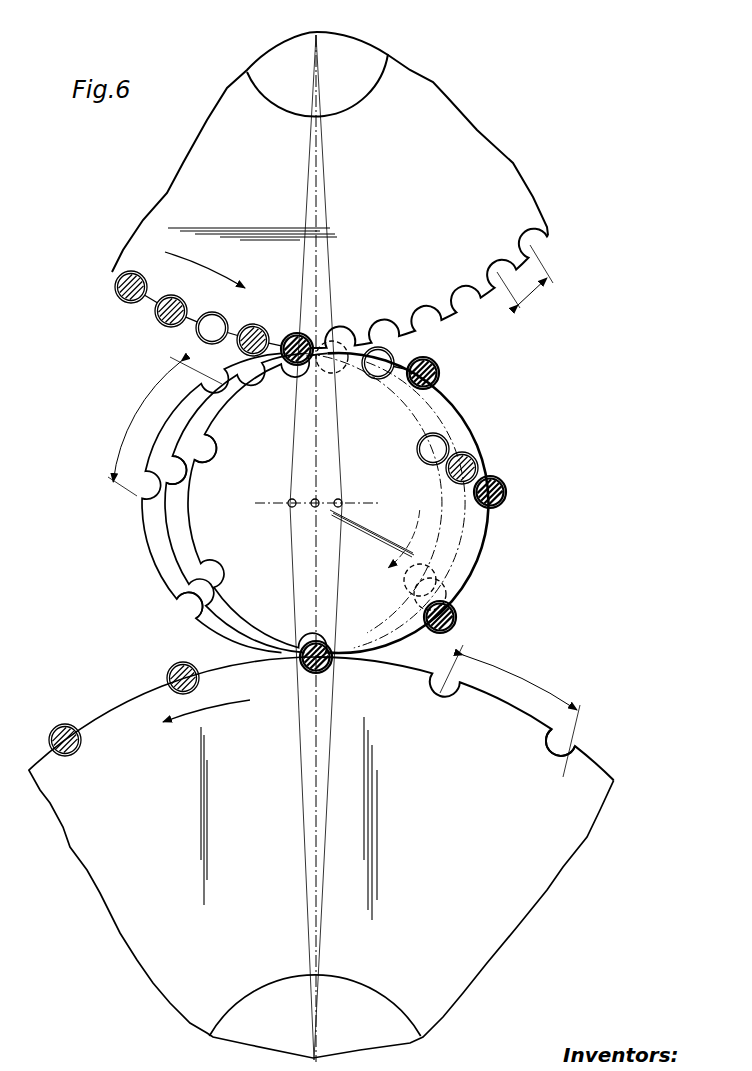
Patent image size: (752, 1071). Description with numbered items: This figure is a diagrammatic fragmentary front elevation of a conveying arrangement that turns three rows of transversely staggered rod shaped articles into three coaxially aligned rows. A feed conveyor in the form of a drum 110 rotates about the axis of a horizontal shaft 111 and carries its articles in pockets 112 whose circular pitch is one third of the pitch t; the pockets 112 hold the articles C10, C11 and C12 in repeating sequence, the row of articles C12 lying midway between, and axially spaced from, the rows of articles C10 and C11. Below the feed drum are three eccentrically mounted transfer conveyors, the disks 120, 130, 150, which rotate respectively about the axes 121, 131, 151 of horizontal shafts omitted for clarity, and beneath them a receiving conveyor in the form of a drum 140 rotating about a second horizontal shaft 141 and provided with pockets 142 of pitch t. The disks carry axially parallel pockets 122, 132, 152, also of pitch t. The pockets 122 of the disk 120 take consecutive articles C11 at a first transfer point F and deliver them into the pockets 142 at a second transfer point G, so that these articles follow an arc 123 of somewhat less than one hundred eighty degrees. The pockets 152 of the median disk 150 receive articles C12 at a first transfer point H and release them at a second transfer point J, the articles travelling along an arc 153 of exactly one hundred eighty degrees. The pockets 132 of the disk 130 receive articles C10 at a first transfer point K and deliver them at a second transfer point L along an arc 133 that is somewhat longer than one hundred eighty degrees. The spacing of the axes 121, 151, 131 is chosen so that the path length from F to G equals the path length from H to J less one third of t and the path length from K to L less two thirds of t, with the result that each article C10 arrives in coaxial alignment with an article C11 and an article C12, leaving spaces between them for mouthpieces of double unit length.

The feed conveyor drum 110 is at (402, 220).
The horizontal shaft 111 is at (277, 63).
The pockets of the feed drum 112 is at (457, 308).
The transfer conveyor disk 120 is at (207, 640).
The axis of disk 120 121 is at (288, 504).
The pockets of disk 120 122 is at (180, 608).
The arc of travel of articles C11 123 is at (420, 420).
The transfer conveyor disk 130 is at (196, 570).
The axis of disk 130 131 is at (342, 504).
The pockets of disk 130 132 is at (212, 445).
The arc of travel of articles C10 133 is at (468, 430).
The receiving conveyor drum 140 is at (283, 815).
The second horizontal shaft 141 is at (302, 1010).
The pockets of the receiving drum 142 is at (572, 755).
The median transfer conveyor disk 150 is at (166, 551).
The axis of disk 150 151 is at (314, 507).
The pockets of disk 150 152 is at (185, 484).
The arc of travel of articles C12 153 is at (467, 530).
The rod shaped articles C10 is at (155, 318).
The rod shaped articles C11 is at (196, 331).
The rod shaped articles C12 is at (115, 289).
The first transfer point F is at (303, 345).
The first transfer point H is at (316, 348).
The first transfer point K is at (330, 350).
The second transfer point G is at (300, 661).
The second transfer point J is at (313, 666).
The second transfer point L is at (330, 663).
The circular pitch t is at (135, 416).